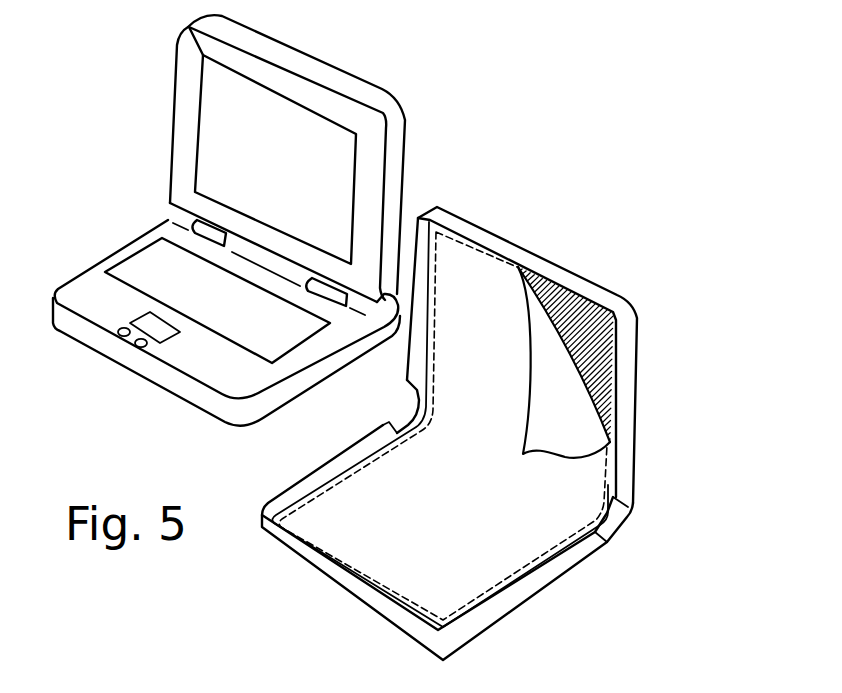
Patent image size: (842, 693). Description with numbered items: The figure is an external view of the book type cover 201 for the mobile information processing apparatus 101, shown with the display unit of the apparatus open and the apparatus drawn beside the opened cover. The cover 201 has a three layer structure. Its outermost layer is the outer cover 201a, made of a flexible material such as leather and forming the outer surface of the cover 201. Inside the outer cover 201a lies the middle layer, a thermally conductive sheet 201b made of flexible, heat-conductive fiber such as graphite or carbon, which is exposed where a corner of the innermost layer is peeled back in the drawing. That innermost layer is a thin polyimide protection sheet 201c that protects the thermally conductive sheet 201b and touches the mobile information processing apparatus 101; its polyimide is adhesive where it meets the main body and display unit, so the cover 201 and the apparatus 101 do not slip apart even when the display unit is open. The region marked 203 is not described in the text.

The mobile information processing apparatus 101 is at (321, 54).
The book type cover 201 is at (506, 408).
The outer cover 201a is at (552, 590).
The thermally conductive sheet 201b is at (620, 323).
The protection sheet 201c is at (573, 427).
The adhesive pad with exposed surface 203 is at (480, 227).